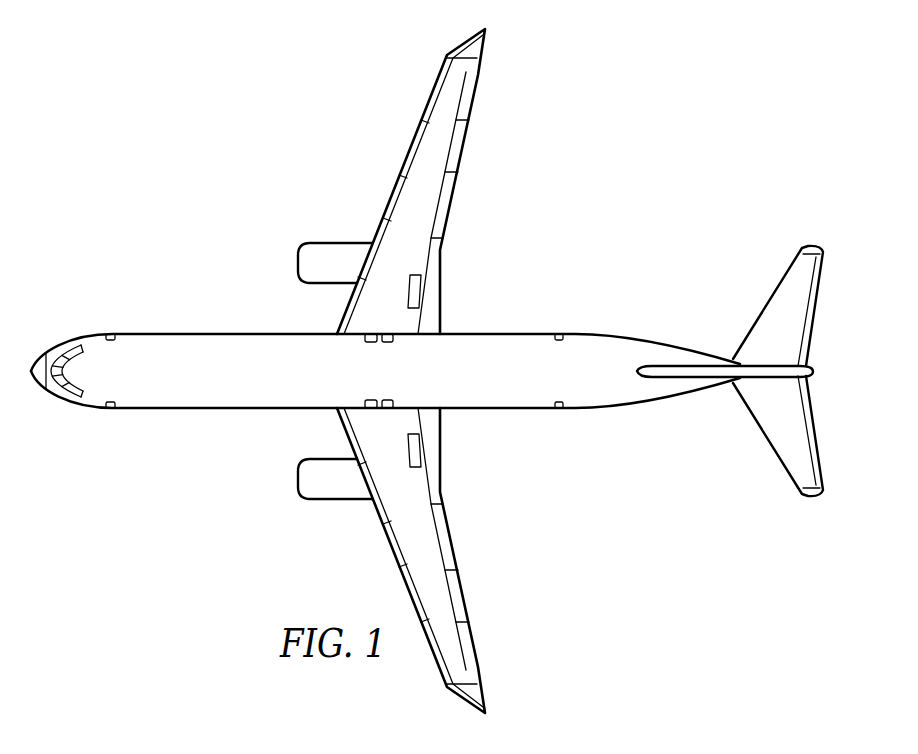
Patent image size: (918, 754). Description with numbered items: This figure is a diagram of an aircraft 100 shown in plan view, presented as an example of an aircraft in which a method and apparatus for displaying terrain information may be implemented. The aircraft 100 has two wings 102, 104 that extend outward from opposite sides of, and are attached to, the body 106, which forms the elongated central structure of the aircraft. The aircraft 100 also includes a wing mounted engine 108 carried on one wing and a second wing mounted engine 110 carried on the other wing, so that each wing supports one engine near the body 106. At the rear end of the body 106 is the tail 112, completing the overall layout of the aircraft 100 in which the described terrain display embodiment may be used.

The aircraft 100 is at (554, 156).
The wing 102 is at (391, 196).
The wing 104 is at (391, 546).
The body 106 is at (186, 333).
The wing mounted engine 108 is at (298, 256).
The wing mounted engine 110 is at (298, 486).
The tail 112 is at (812, 323).